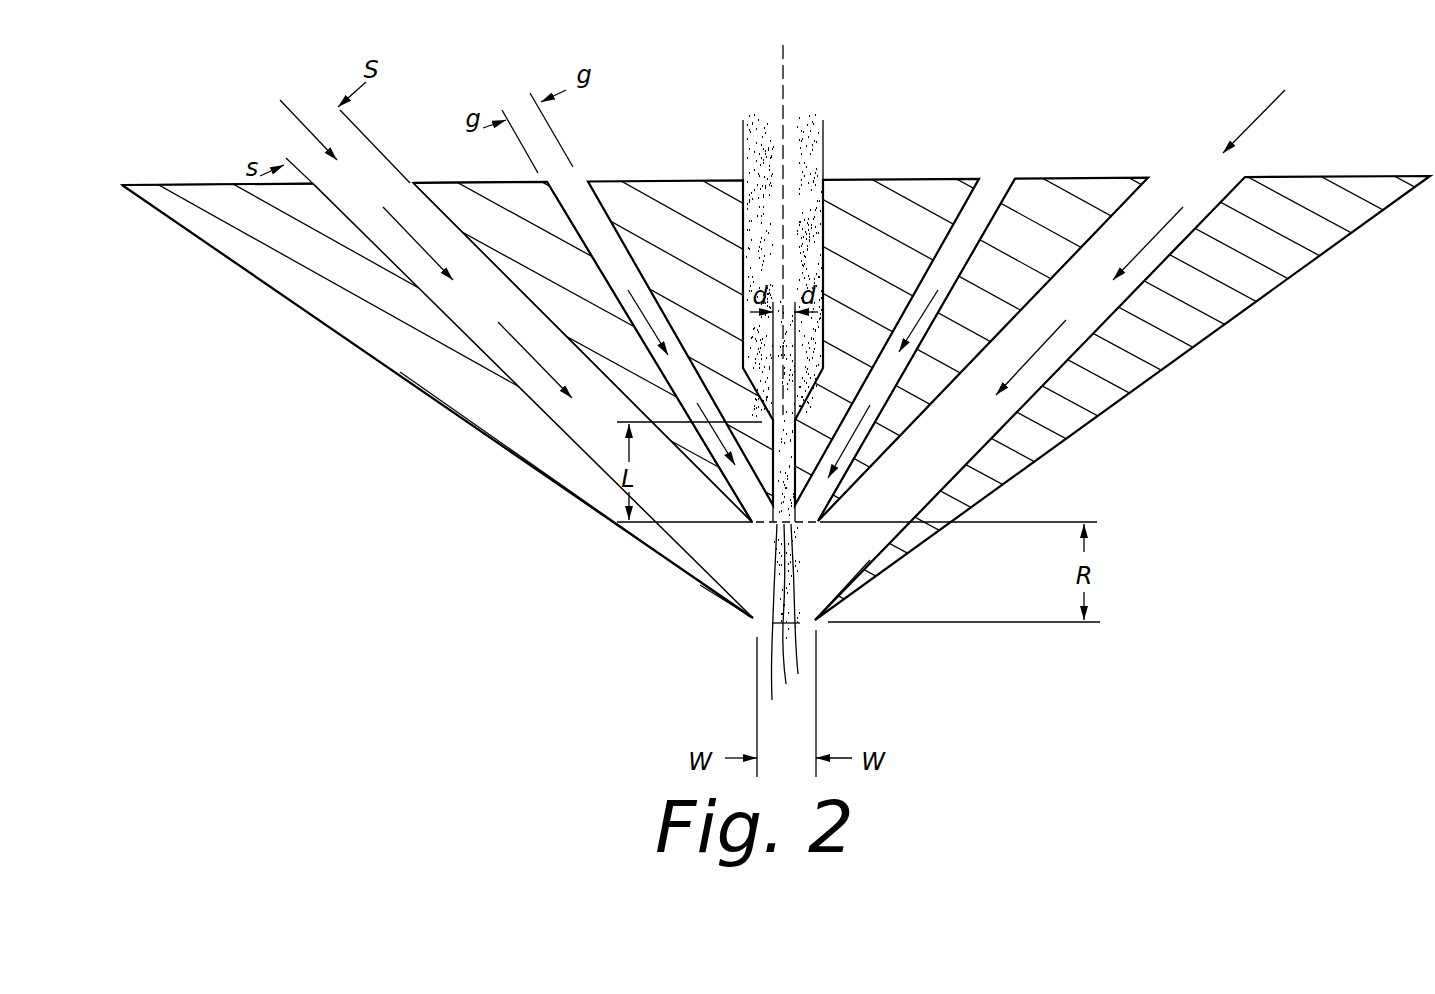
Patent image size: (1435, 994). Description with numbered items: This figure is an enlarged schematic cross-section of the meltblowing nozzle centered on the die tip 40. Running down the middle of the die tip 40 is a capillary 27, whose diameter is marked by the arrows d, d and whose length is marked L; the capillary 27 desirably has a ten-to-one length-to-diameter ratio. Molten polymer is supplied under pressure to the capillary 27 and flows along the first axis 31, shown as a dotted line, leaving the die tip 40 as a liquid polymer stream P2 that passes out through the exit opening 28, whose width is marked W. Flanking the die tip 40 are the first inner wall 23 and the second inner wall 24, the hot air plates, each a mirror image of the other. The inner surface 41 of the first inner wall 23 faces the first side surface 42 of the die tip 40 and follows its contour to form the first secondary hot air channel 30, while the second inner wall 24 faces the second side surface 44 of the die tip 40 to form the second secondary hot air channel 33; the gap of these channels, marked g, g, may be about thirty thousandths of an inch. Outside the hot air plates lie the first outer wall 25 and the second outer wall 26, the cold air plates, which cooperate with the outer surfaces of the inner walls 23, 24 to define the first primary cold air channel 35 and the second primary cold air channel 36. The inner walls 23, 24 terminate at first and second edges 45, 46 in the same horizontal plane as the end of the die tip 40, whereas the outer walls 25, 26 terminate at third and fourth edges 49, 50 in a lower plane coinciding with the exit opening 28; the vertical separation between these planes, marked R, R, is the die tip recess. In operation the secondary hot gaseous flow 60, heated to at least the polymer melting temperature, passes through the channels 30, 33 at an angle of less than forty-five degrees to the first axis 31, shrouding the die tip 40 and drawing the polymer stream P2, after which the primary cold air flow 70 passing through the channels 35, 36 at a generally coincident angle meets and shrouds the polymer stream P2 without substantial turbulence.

The first inner wall 23 is at (1102, 177).
The second inner wall 24 is at (466, 205).
The first outer wall 25 is at (1313, 237).
The second outer wall 26 is at (238, 262).
The capillary 27 is at (801, 456).
The exit opening 28 is at (749, 650).
The first secondary hot air channel 30 is at (998, 179).
The first axis 31 is at (789, 91).
The second secondary hot air channel 33 is at (574, 193).
The first primary cold air channel 35 is at (1197, 186).
The second primary cold air channel 36 is at (385, 200).
The die tip 40 is at (643, 181).
The inner surface 41 is at (985, 210).
The first side surface 42 is at (943, 250).
The second side surface 44 is at (485, 265).
The first edge 45 is at (830, 525).
The second edge 46 is at (748, 519).
The third edge 49 is at (825, 625).
The fourth edge 50 is at (748, 620).
The secondary hot gaseous flow 60 is at (652, 323).
The primary cold air flow 70 is at (537, 363).
The powder stream P2 is at (786, 560).